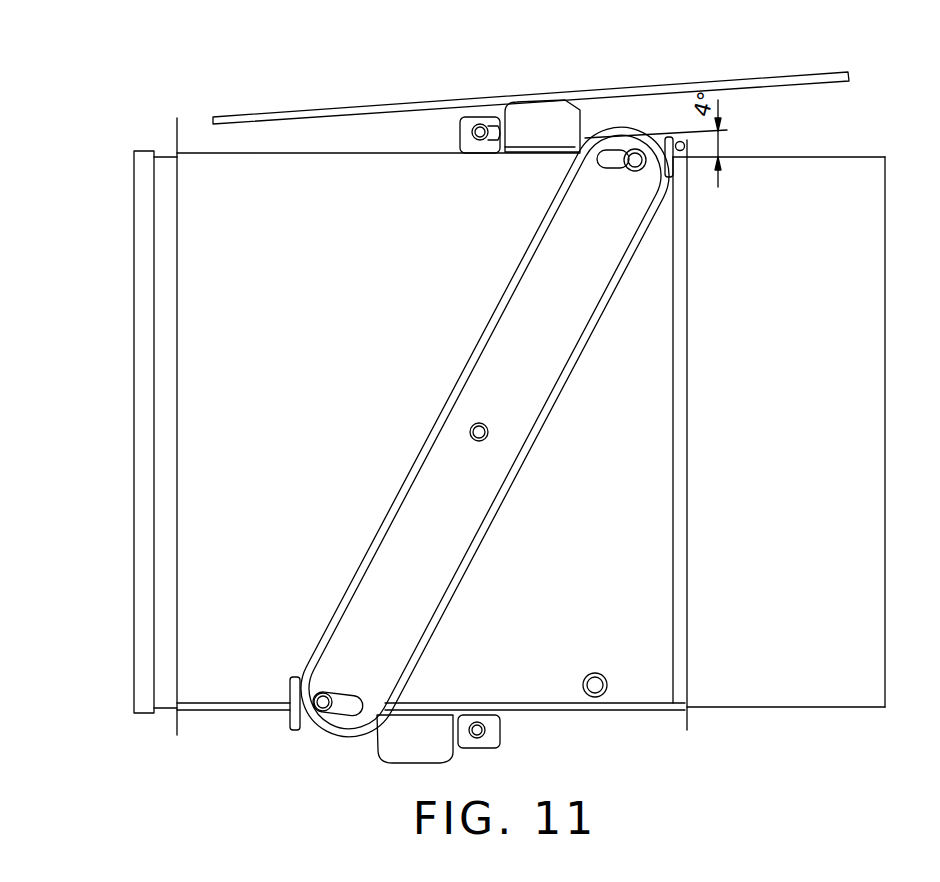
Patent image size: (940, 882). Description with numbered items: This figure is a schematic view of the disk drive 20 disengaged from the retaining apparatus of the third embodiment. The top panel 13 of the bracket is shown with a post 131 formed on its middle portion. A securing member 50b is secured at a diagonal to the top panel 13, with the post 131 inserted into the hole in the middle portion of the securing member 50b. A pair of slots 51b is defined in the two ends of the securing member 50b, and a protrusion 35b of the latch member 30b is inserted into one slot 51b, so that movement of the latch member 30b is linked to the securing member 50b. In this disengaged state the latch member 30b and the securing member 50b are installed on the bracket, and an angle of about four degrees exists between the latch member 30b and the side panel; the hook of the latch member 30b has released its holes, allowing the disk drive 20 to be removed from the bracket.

The top panel 13 is at (275, 188).
The disk drive 20 is at (817, 188).
The latch member 30b is at (548, 122).
The securing member 50b is at (435, 508).
The slot 51b is at (615, 157).
The protrusion 35b is at (640, 155).
The post 131 is at (468, 427).